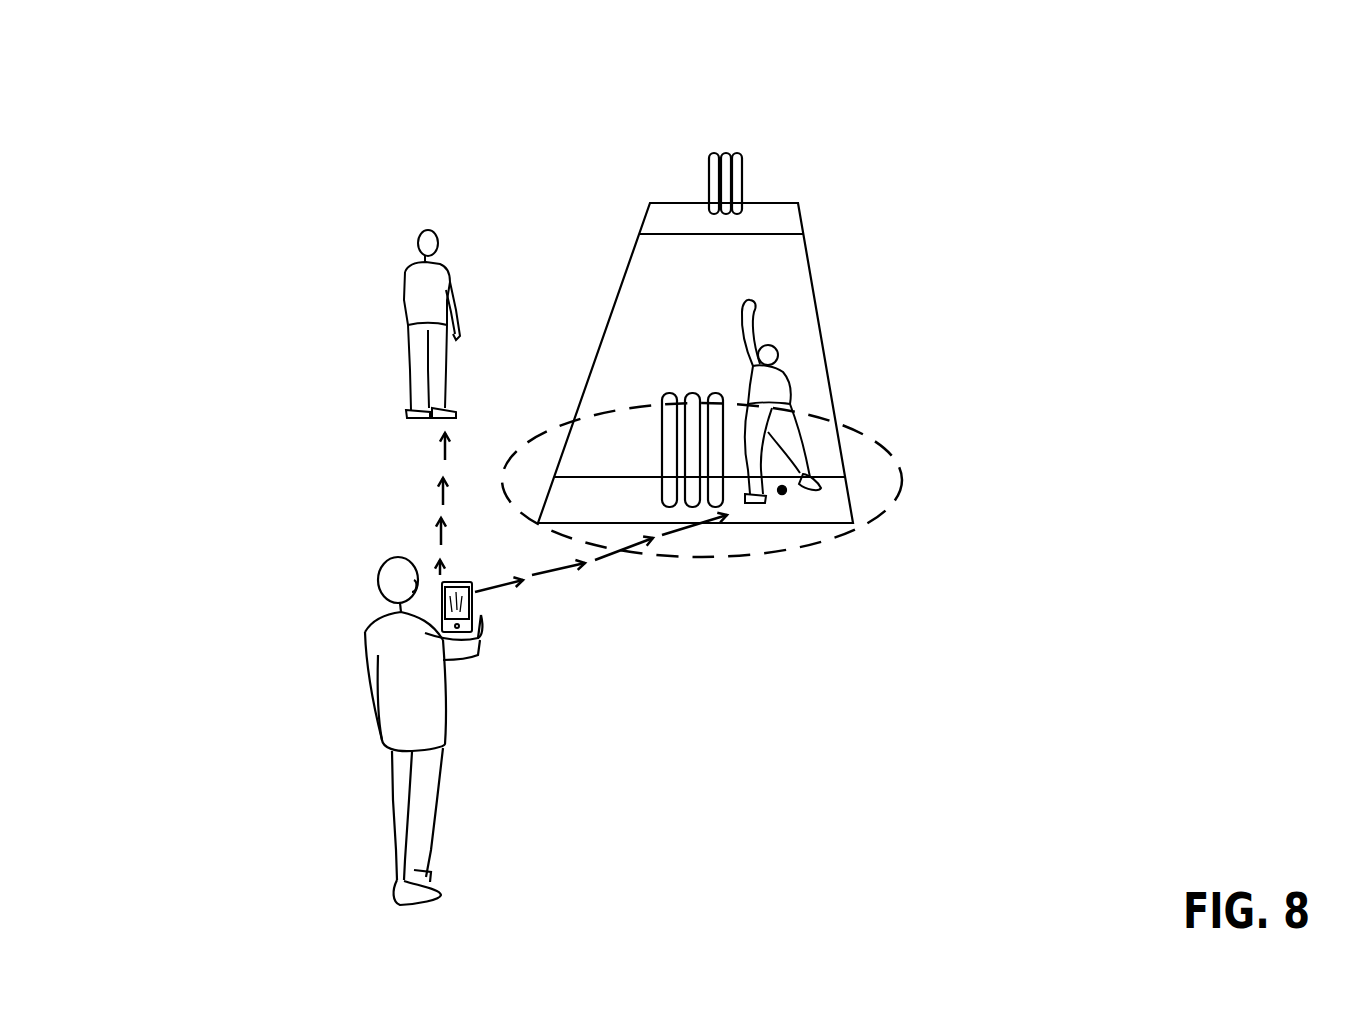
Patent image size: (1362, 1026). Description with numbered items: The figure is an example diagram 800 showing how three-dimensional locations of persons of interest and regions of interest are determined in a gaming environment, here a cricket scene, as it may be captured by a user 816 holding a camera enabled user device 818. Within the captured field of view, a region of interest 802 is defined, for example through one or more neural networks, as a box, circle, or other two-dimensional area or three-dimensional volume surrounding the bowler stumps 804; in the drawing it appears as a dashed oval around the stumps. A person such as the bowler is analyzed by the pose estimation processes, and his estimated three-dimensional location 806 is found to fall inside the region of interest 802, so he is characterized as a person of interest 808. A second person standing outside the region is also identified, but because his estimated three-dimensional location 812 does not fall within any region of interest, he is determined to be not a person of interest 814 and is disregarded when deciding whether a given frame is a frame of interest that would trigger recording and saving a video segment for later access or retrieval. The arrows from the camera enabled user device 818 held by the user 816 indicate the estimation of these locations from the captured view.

The diagram 800 is at (1288, 72).
The region of interest 802 is at (887, 443).
The bowler stumps 804 is at (684, 394).
The 3D location 806 is at (782, 490).
The person of interest 808 is at (783, 320).
The estimated 3D location 812 is at (486, 407).
The not a person of interest 814 is at (398, 265).
The user 816 is at (367, 633).
The camera enabled user device 818 is at (455, 637).